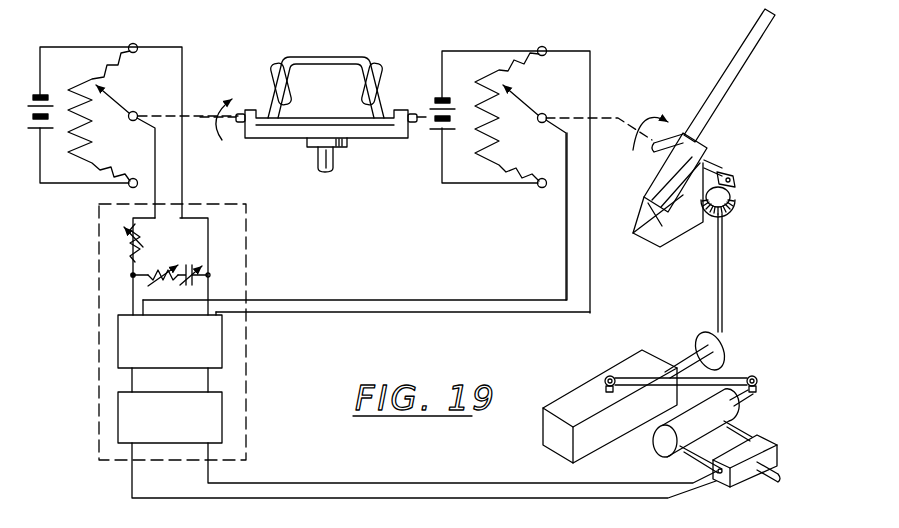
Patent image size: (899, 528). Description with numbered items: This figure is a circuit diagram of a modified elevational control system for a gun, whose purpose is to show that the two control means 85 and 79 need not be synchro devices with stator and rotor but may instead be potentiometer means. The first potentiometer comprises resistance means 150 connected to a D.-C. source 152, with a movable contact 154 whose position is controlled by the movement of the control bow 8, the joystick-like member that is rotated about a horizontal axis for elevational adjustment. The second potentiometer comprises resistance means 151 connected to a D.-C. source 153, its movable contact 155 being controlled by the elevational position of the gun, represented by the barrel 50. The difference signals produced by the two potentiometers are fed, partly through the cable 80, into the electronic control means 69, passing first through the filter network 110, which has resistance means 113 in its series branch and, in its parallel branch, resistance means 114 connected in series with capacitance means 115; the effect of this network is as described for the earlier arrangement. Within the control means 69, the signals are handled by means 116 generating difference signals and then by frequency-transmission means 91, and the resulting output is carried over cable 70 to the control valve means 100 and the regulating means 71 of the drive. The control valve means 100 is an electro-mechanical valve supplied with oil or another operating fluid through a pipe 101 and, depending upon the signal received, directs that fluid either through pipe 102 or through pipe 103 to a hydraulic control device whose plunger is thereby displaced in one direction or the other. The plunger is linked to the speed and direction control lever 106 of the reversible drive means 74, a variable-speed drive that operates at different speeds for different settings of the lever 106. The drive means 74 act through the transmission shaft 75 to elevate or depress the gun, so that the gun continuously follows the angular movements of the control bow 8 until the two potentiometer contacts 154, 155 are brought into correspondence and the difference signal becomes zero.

The control bow 8 is at (313, 58).
The control means 85 is at (186, 57).
The D.-C. source 152 is at (50, 97).
The movable contact 154 is at (123, 97).
The resistance means 150 is at (90, 143).
The D.-C. source 153 is at (437, 100).
The movable contact 155 is at (523, 101).
The resistance means 151 is at (492, 147).
The control means 79 is at (598, 72).
The barrel 50 is at (722, 106).
The network 110 is at (191, 232).
The resistance means 113 is at (143, 243).
The resistance means 114 is at (131, 277).
The capacitance means 115 is at (210, 277).
The control means 69 is at (232, 253).
The means generating difference signals 116 is at (216, 358).
The frequency-transmission means 91 is at (218, 425).
The cable 80 is at (429, 312).
The cable 70 is at (490, 497).
The shaft 75 is at (723, 302).
The reversible drive means 74 is at (572, 397).
The speed and direction control lever 106 is at (725, 379).
The regulating means 71 is at (753, 403).
The pipe 102 is at (733, 430).
The pipe 103 is at (693, 454).
The control valve means 100 is at (737, 478).
The pipe 101 is at (772, 480).